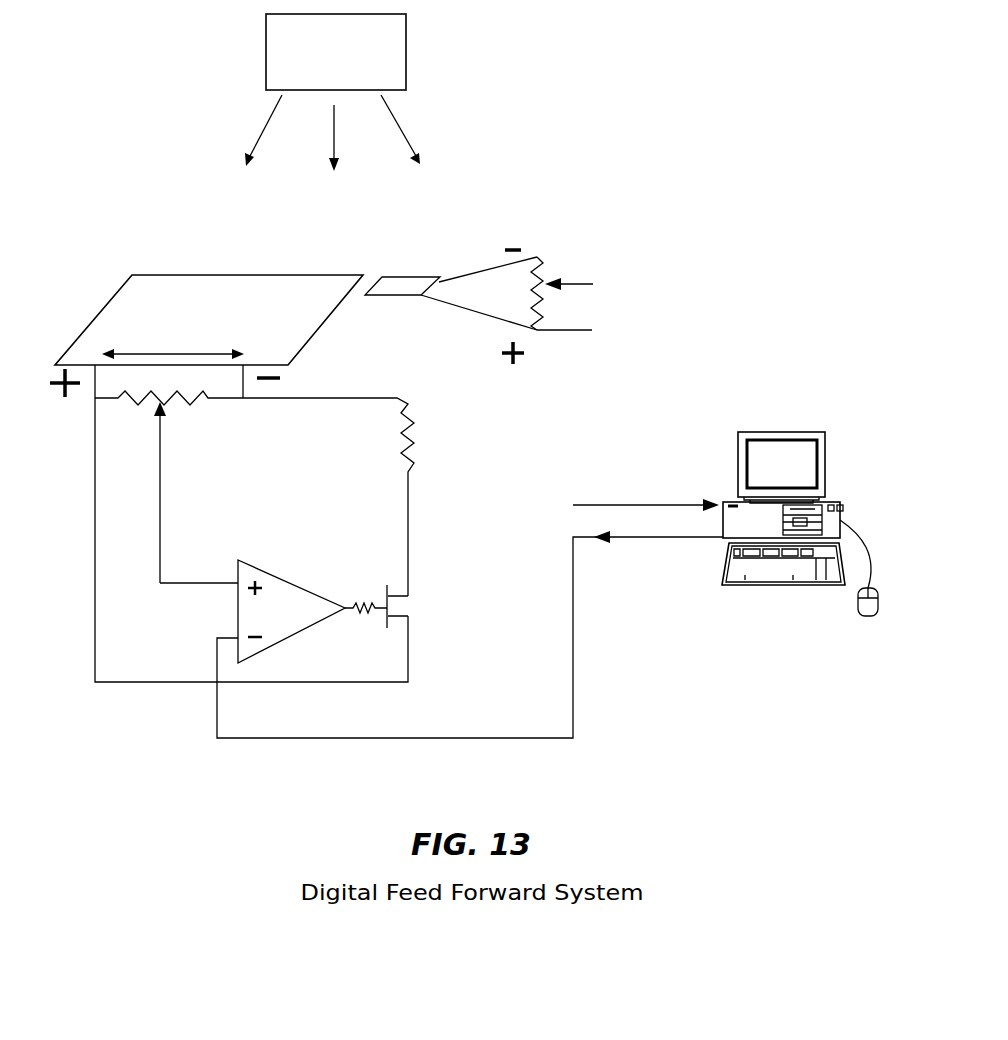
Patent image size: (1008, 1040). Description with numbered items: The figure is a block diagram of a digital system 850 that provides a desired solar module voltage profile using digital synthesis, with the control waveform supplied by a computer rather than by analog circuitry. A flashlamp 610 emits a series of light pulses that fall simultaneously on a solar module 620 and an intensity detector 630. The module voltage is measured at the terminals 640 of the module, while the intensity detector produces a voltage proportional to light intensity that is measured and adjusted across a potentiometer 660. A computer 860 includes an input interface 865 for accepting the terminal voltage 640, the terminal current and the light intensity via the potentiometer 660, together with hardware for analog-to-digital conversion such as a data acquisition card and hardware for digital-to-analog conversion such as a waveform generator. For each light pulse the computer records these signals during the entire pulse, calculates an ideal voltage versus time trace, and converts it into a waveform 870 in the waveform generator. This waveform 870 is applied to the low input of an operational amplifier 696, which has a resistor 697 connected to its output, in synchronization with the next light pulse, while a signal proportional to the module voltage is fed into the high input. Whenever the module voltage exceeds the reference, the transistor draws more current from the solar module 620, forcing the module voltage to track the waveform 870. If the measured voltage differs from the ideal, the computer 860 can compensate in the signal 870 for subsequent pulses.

The flashlamp 610 is at (406, 37).
The solar module 620 is at (110, 305).
The intensity detector 630 is at (421, 292).
The terminals of the module 640 is at (152, 353).
The potentiometer 660 is at (540, 265).
The operational amplifier 696 is at (297, 590).
The resistor 697 is at (357, 614).
The digital system 850 is at (150, 796).
The computer 860 is at (818, 442).
The input interface 865 is at (652, 505).
The signal 870 is at (576, 658).